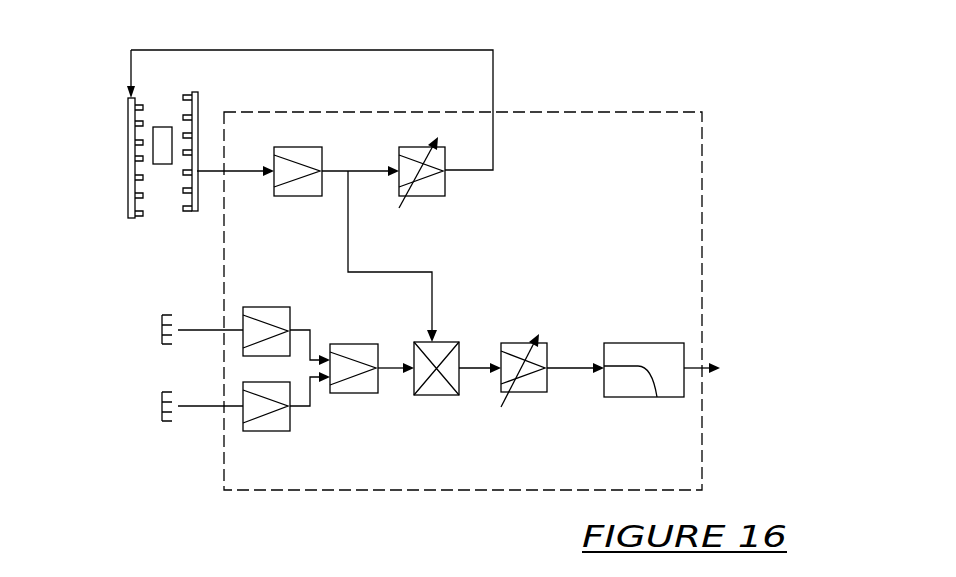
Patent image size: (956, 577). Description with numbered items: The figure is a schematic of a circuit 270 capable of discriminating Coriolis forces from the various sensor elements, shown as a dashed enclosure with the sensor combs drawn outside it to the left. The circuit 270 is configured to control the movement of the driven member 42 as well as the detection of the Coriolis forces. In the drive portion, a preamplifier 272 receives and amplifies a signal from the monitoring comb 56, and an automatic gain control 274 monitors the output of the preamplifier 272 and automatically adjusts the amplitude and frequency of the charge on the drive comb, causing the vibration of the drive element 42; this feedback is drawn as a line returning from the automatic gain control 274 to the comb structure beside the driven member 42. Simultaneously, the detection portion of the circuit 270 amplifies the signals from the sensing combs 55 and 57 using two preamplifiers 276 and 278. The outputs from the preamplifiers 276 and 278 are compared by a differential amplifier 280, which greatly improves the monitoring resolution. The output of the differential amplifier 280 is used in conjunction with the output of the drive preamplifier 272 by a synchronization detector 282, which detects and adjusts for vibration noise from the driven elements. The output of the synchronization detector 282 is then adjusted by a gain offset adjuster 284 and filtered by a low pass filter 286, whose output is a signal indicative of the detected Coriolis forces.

The monitoring comb 56 is at (120, 106).
The driven member 42 is at (166, 126).
The circuit 270 is at (636, 100).
The preamplifier 272 is at (297, 206).
The automatic gain control 274 is at (428, 207).
The preamplifier 276 is at (268, 299).
The preamplifier 278 is at (267, 440).
The differential amplifier 280 is at (359, 404).
The synchronization detector 282 is at (452, 332).
The gain offset adjuster 284 is at (528, 404).
The low pass filter 286 is at (637, 334).
The sensing comb 55 is at (187, 329).
The sensing comb 57 is at (187, 406).